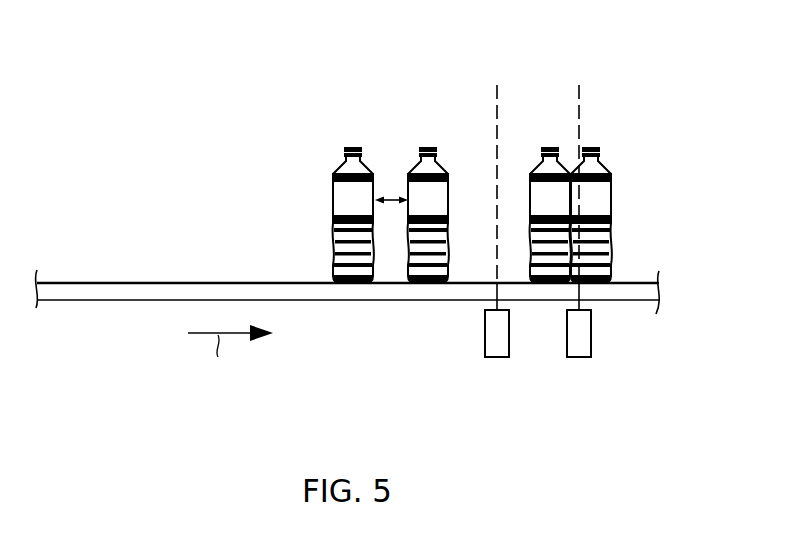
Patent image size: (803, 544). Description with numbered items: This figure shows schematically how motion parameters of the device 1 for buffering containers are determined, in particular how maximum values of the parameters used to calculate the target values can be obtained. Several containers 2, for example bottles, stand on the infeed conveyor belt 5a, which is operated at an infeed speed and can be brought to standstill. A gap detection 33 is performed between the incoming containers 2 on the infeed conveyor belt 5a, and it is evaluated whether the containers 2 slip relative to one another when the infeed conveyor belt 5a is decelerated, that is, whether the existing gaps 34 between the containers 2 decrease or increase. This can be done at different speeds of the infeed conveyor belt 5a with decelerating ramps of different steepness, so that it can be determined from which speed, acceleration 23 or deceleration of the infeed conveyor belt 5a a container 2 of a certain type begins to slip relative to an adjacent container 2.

The device 1 is at (113, 79).
The container 2 is at (340, 170).
The infeed conveyor belt 5a is at (87, 289).
The target acceleration 23 is at (556, 93).
The gap detection 33 is at (540, 362).
The gap 34 is at (391, 199).